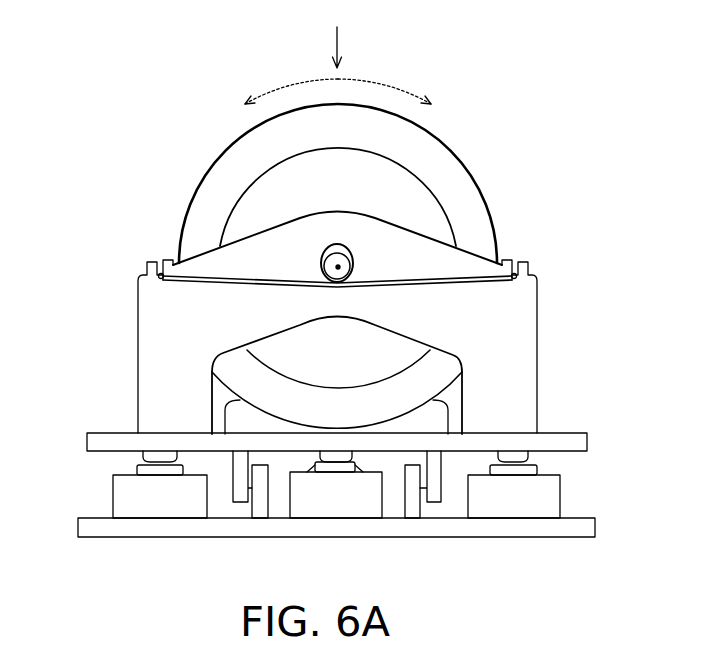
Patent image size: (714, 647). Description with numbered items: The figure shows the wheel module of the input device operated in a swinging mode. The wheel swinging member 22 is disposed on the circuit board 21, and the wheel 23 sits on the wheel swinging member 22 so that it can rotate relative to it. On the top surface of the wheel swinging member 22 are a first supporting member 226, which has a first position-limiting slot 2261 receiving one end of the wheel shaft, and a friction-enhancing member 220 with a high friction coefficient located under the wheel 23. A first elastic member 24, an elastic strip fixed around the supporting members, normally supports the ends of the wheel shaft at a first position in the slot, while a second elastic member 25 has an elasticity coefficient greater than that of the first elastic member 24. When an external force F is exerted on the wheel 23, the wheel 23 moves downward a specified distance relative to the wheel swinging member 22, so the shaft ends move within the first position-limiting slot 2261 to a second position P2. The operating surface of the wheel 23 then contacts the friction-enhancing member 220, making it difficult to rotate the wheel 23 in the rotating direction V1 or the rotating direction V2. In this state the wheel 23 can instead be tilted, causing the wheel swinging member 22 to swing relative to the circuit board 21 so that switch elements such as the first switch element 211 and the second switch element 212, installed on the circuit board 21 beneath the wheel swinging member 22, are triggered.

The external force F is at (337, 34).
The rotating direction V1 is at (270, 99).
The rotating direction V2 is at (407, 100).
The wheel 23 is at (458, 168).
The first elastic member 24 is at (202, 275).
The first position-limiting slot 2261 is at (328, 244).
The second position P2 is at (338, 266).
The wheel swinging member 22 is at (115, 353).
The first supporting member 226 is at (525, 376).
The friction-enhancing member 220 is at (235, 428).
The circuit board 21 is at (138, 536).
The first switch element 211 is at (125, 507).
The second switch element 212 is at (547, 508).
The second elastic member 25 is at (365, 502).